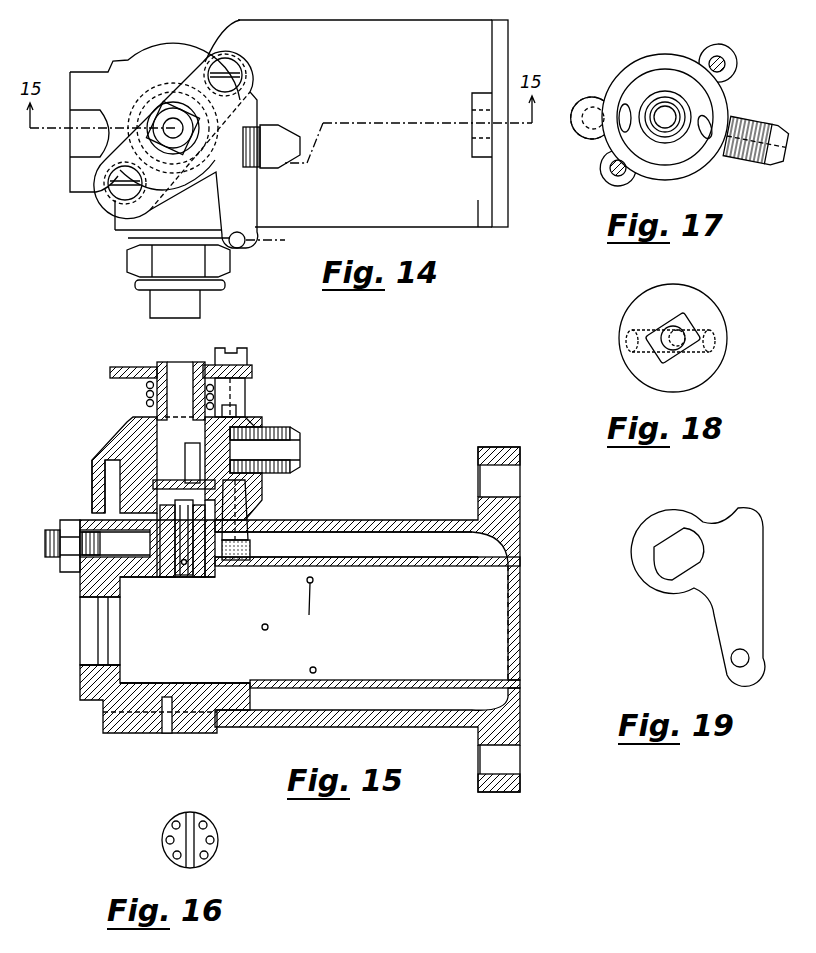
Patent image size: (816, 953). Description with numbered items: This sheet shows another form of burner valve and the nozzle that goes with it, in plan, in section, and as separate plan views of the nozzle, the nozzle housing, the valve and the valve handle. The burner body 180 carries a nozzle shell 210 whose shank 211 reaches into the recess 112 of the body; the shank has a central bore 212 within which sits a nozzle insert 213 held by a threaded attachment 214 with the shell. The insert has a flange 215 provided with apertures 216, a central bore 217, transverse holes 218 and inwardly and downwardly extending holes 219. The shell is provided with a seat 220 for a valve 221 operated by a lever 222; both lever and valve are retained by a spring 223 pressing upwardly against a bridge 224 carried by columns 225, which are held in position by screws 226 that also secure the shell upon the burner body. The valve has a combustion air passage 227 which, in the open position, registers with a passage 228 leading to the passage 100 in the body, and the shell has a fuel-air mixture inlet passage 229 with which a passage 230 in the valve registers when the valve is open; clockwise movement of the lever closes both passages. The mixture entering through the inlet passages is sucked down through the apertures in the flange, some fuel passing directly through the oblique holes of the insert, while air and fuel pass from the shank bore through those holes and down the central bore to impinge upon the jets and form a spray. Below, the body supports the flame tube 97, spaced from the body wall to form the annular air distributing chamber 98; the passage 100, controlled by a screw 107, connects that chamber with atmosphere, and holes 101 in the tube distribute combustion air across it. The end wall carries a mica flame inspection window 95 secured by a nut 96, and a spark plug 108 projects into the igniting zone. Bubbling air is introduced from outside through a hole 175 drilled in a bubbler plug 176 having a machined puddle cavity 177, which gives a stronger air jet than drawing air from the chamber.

In FIG. 15, the mica flame inspection window 95 is at (100, 640).
In FIG. 15, the nut 96 is at (82, 678).
In FIG. 15, the flame tube 97 is at (415, 680).
In FIG. 15, the annular air distributing chamber 98 is at (433, 555).
In FIG. 15, the passage 100 is at (262, 540).
In FIG. 15, the holes 101 is at (263, 680).
In FIG. 15, the screw 107 is at (50, 532).
In FIG. 14, the spark plug 108 is at (135, 282).
In FIG. 15, the recess 112 is at (165, 548).
In FIG. 15, the hole 175 is at (172, 690).
In FIG. 15, the bubbler plug 176 is at (190, 718).
In FIG. 15, the puddle cavity 177 is at (158, 690).
In FIG. 14, the burner body 180 is at (470, 216).
In FIG. 15, the burner body 180 is at (393, 520).
In FIG. 14, the nozzle shell 210 is at (153, 66).
In FIG. 17, the nozzle shell 210 is at (632, 72).
In FIG. 15, the nozzle shell 210 is at (100, 460).
In FIG. 15, the shank 211 is at (165, 560).
In FIG. 15, the central bore 212 is at (246, 500).
In FIG. 15, the nozzle insert 213 is at (196, 560).
In FIG. 15, the threaded attachment 214 is at (175, 565).
In FIG. 16, the flange 215 is at (220, 840).
In FIG. 15, the flange 215 is at (148, 482).
In FIG. 16, the apertures 216 is at (200, 824).
In FIG. 15, the apertures 216 is at (185, 480).
In FIG. 15, the central bore 217 is at (184, 575).
In FIG. 15, the transverse holes 218 is at (255, 520).
In FIG. 15, the inwardly and downwardly extending holes 219 is at (260, 562).
In FIG. 17, the seat 220 is at (678, 165).
In FIG. 14, the valve 221 is at (195, 138).
In FIG. 18, the valve 221 is at (705, 318).
In FIG. 14, the lever 222 is at (252, 208).
In FIG. 19, the lever 222 is at (755, 595).
In FIG. 15, the lever 222 is at (240, 412).
In FIG. 15, the spring 223 is at (145, 394).
In FIG. 14, the bridge 224 is at (150, 183).
In FIG. 15, the bridge 224 is at (110, 374).
In FIG. 14, the columns 225 is at (235, 60).
In FIG. 15, the columns 225 is at (252, 382).
In FIG. 14, the screws 226 is at (244, 66).
In FIG. 17, the screws 226 is at (727, 63).
In FIG. 15, the screws 226 is at (235, 358).
In FIG. 14, the combustion air passage 227 is at (176, 126).
In FIG. 18, the combustion air passage 227 is at (672, 330).
In FIG. 15, the combustion air passage 227 is at (178, 380).
In FIG. 17, the passage 228 is at (612, 130).
In FIG. 15, the passage 228 is at (92, 478).
In FIG. 14, the fuel-air mixture inlet passage 229 is at (271, 146).
In FIG. 17, the fuel-air mixture inlet passage 229 is at (712, 120).
In FIG. 15, the fuel-air mixture inlet passage 229 is at (282, 452).
In FIG. 15, the passage 230 is at (252, 420).